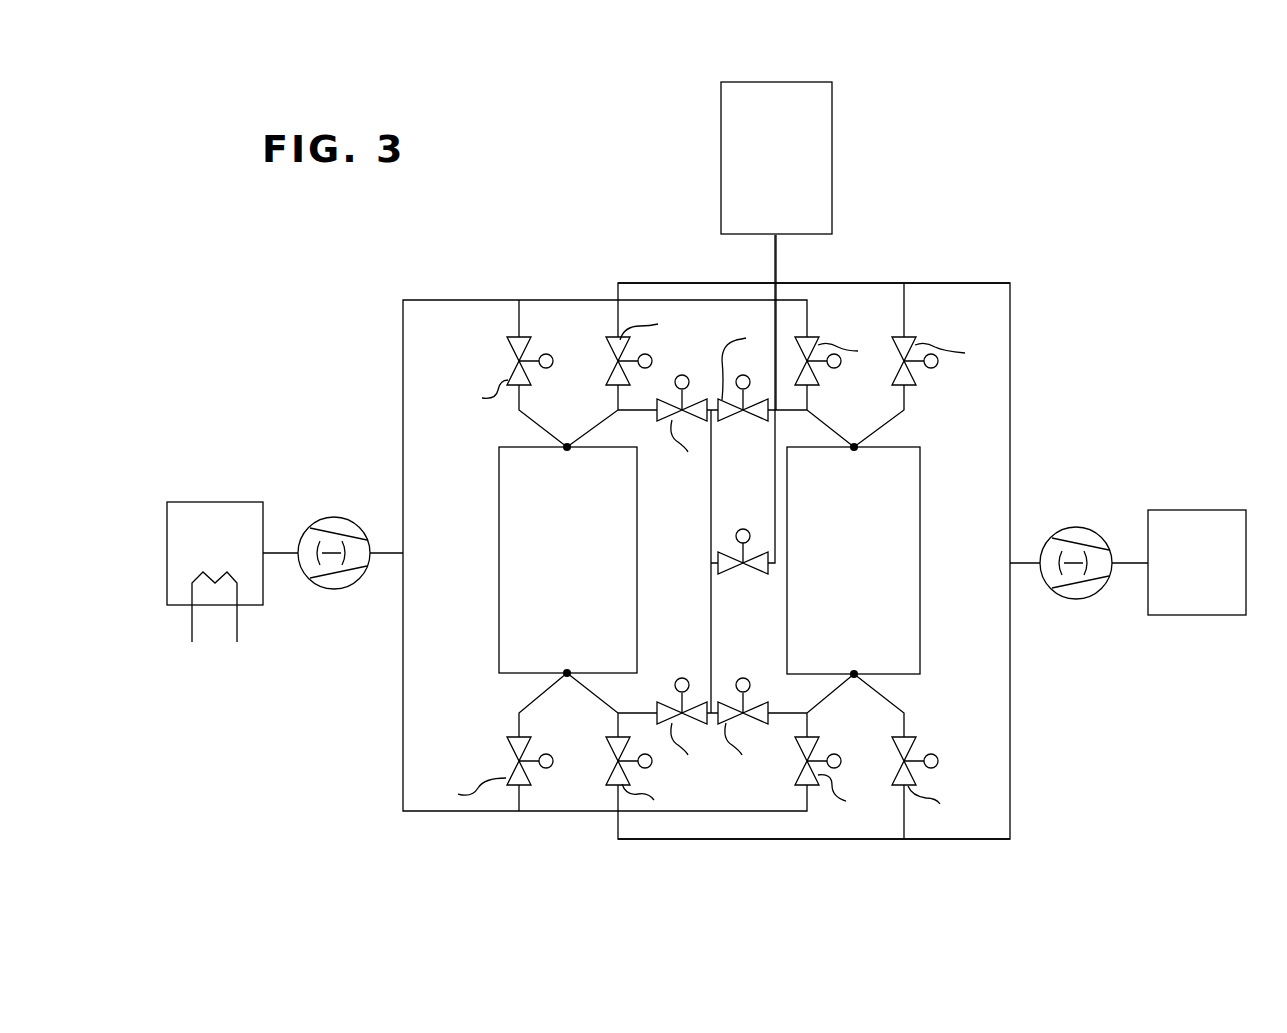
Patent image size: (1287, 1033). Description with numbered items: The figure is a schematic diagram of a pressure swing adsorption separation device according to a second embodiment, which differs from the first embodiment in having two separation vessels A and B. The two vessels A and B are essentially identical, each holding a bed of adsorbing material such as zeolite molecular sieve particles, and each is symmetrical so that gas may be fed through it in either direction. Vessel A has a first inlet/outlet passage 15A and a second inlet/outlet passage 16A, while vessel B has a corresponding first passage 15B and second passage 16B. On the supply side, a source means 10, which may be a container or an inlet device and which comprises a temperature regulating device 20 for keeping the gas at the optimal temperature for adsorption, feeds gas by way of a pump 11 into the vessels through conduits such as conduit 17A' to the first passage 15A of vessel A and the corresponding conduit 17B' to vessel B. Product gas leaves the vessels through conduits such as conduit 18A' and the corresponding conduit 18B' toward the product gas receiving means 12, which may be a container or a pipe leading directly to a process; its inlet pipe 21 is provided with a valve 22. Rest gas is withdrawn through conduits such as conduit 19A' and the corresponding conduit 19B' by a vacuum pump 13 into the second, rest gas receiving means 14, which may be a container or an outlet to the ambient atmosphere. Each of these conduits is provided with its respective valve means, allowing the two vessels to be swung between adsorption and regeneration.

The source means 10 is at (214, 514).
The pump 11 is at (324, 516).
The product gas receiving means 12 is at (814, 138).
The vacuum pump 13 is at (1074, 526).
The second, rest gas receiving means 14 is at (1207, 528).
The first inlet/outlet passage 15A is at (567, 670).
The first passage 15B is at (854, 671).
The second inlet/outlet passage 16A is at (567, 450).
The second passage 16B is at (854, 450).
The conduit 17A' is at (491, 762).
The conduit 17B' is at (784, 776).
The conduit 18A' is at (671, 706).
The conduit 18B' is at (749, 706).
The conduit 19A' is at (808, 813).
The conduit 19B' is at (937, 759).
The temperature regulating device 20 is at (193, 620).
The inlet pipe 21 is at (778, 262).
The valve 22 is at (728, 568).
The separation vessel A is at (499, 562).
The separation vessel B is at (920, 575).